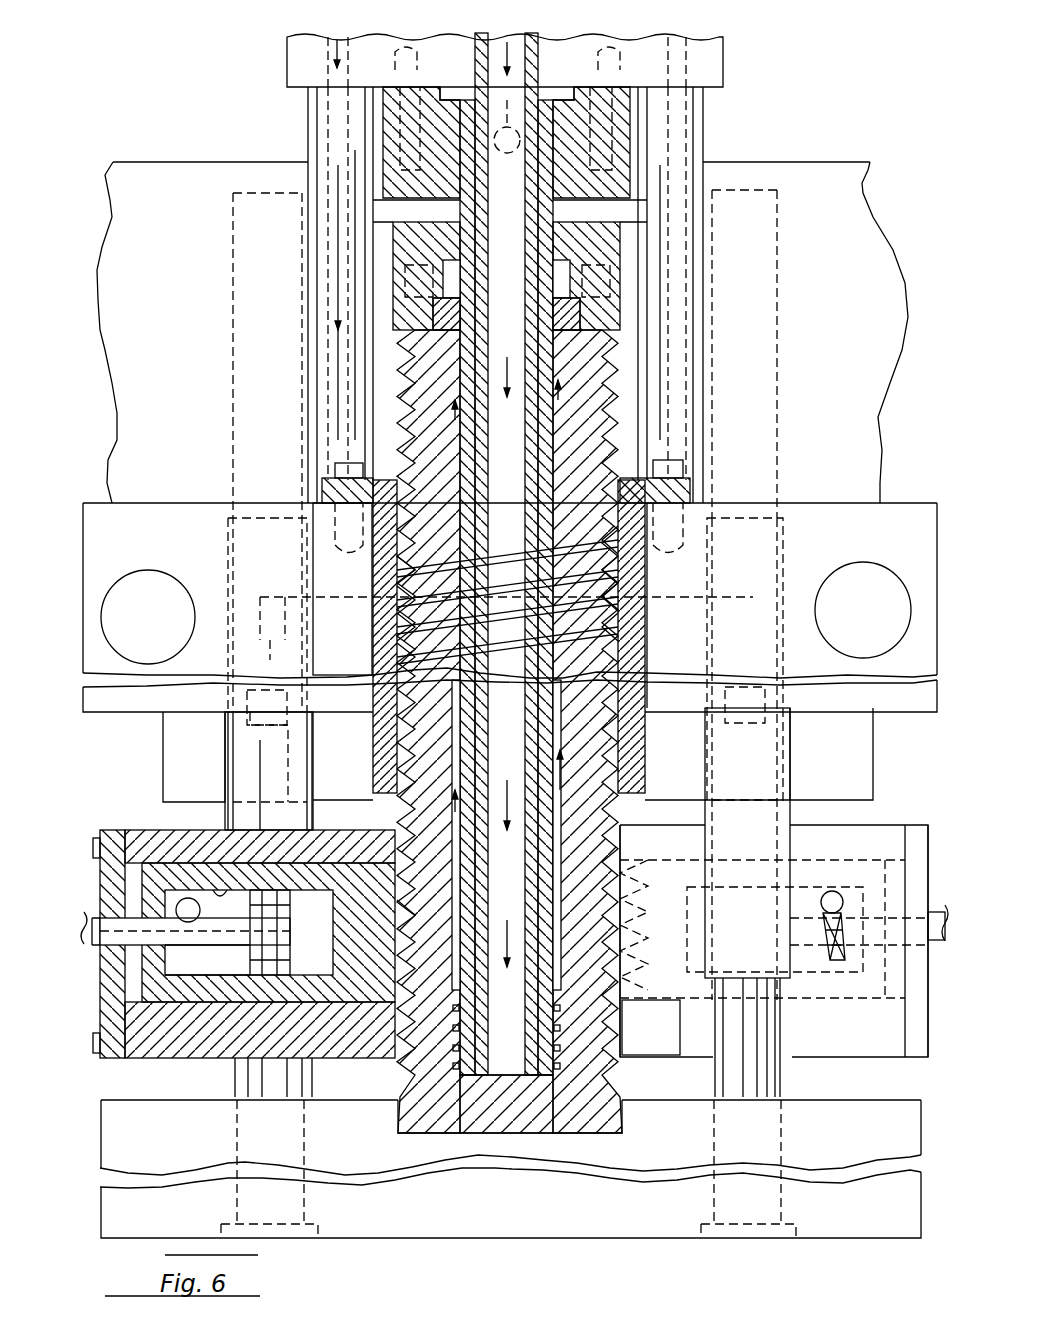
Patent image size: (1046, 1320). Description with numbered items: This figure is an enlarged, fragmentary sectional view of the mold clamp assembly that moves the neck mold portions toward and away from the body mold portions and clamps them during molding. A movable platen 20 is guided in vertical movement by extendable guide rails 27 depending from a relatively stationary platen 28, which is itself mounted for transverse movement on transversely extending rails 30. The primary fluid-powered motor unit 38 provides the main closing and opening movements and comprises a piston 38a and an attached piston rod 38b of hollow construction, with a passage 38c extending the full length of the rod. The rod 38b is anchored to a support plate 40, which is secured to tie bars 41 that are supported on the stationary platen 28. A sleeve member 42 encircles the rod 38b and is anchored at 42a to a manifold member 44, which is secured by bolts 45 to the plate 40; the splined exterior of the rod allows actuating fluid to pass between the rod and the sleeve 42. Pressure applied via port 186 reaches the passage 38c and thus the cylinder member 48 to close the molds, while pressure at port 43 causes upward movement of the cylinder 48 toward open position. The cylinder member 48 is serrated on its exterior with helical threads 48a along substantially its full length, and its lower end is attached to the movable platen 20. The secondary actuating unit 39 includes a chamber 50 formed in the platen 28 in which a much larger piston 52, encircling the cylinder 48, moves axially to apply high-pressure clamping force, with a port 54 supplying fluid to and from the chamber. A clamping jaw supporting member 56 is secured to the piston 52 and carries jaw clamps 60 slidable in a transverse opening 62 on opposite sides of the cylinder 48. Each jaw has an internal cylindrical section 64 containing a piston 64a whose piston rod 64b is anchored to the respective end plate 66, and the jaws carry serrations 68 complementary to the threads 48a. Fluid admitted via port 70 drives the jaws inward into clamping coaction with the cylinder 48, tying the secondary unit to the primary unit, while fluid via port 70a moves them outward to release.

The movable platen 20 is at (880, 1100).
The extendable guide rails 27 is at (240, 1080).
The stationary platen 28 is at (898, 502).
The transversely extending rails 30 is at (138, 580).
The primary fluid-powered motor unit 38 is at (632, 268).
The piston 38a is at (478, 1066).
The piston rod 38b is at (535, 349).
The passage 38c is at (556, 222).
The secondary actuating unit 39 is at (713, 594).
The support plate 40 is at (724, 52).
The tie bars 41 is at (317, 120).
The sleeve member 42 is at (575, 197).
The anchoring of sleeve 42a is at (546, 104).
The port 43 is at (504, 118).
The manifold member 44 is at (446, 95).
The bolts 45 is at (402, 48).
The cylinder member 48 is at (620, 1130).
The serrations 48a is at (620, 1022).
The chamber 50 is at (720, 605).
The piston 52 is at (288, 642).
The port 54 is at (305, 590).
The clamping jaw supporting member 56 is at (873, 850).
The jaw clamps 60 is at (350, 1002).
The transverse opening 62 is at (215, 893).
The internal cylindrical section 64 is at (232, 892).
The piston 64a is at (278, 972).
The piston rod 64b is at (200, 975).
The end plate 66 is at (117, 832).
The serrations 68 is at (400, 927).
The port 70 is at (93, 930).
The port 70a is at (185, 900).
The port 186 is at (490, 42).